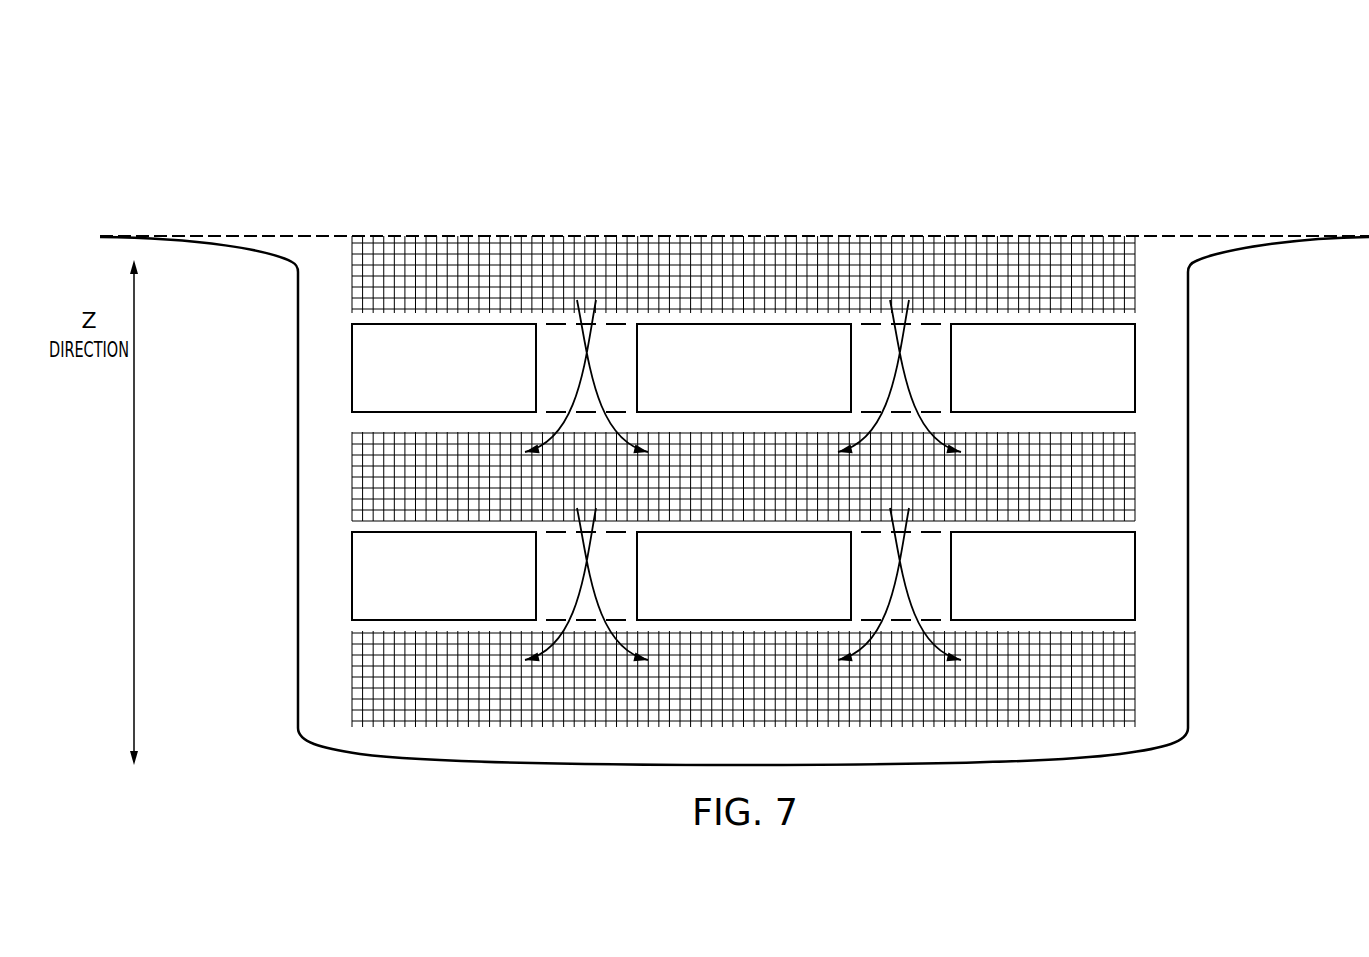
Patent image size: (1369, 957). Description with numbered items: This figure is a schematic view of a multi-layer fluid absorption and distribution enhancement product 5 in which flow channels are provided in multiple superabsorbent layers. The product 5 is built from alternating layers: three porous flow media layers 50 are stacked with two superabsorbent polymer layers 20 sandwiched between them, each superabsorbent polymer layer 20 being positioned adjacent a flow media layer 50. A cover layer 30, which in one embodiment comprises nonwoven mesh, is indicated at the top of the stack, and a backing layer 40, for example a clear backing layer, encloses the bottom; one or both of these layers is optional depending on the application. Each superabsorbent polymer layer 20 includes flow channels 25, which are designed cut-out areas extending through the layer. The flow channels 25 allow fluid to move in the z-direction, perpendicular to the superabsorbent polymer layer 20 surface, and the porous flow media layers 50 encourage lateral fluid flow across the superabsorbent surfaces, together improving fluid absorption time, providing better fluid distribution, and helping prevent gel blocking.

The fluid absorption and distribution enhancement product 5 is at (1265, 177).
The superabsorbent polymer layer 20 is at (762, 381).
The flow channels 25 is at (572, 333).
The cover layer 30 is at (300, 235).
The backing layer 40 is at (398, 764).
The flow media layer 50 is at (1125, 280).